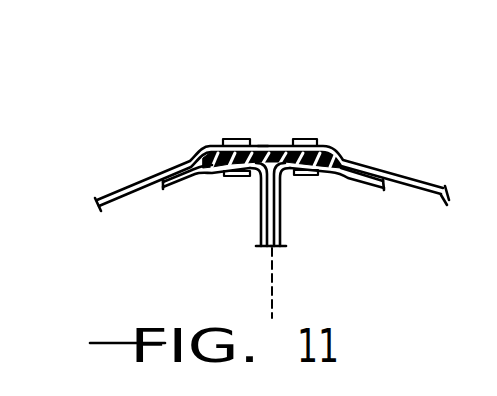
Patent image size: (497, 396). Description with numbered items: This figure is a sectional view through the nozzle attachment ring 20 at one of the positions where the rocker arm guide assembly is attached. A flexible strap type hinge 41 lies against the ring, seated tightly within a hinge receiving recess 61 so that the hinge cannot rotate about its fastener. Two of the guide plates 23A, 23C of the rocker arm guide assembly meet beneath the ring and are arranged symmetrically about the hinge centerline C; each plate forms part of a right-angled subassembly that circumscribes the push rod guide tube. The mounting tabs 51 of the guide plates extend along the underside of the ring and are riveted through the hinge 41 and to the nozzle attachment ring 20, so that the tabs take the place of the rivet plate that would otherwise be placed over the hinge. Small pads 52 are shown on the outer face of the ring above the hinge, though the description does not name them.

The nozzle attachment ring 20 is at (112, 170).
The flexible strap type hinge 41 is at (338, 157).
The mounting tab 51 is at (192, 186).
The outer pads 52 is at (233, 137).
The hinge receiving recess 61 is at (263, 145).
The guide plate 23A is at (261, 233).
The guide plate 23C is at (280, 233).
The hinge centerline C is at (273, 310).